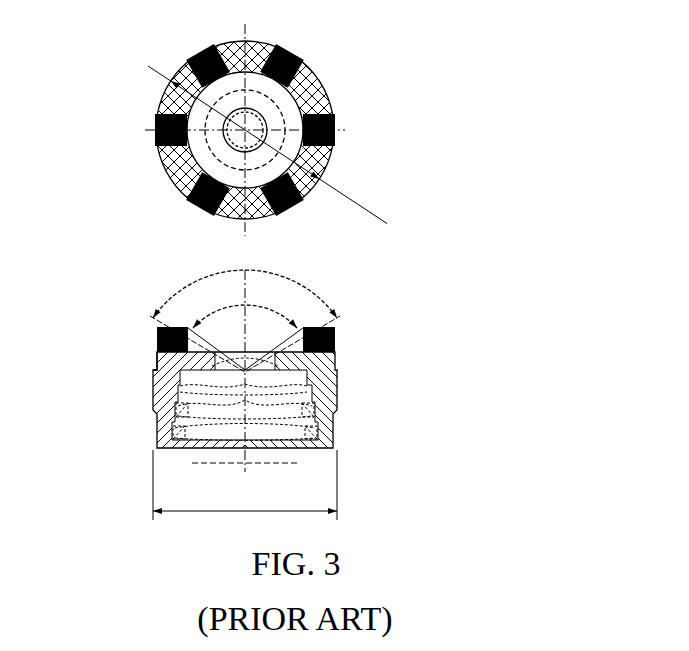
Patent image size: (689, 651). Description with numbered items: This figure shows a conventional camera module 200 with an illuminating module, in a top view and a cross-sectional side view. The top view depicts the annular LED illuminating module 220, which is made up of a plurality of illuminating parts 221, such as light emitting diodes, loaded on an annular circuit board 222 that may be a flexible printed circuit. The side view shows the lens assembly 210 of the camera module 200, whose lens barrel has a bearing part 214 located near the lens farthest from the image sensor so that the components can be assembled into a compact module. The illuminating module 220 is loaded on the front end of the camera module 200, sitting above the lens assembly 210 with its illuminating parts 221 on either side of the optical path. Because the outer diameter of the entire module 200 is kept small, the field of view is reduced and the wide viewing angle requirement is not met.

The camera module 200 is at (252, 370).
The lens assembly 210 is at (352, 421).
The bearing part 214 is at (160, 363).
The illuminating module 220 is at (414, 168).
The illuminating parts 221 is at (275, 56).
The annular circuit board 222 is at (317, 90).